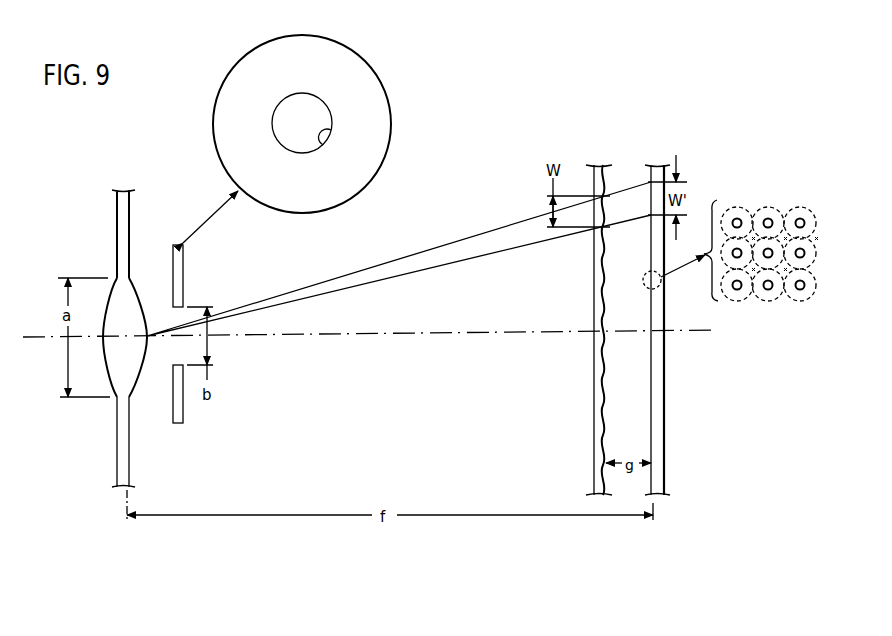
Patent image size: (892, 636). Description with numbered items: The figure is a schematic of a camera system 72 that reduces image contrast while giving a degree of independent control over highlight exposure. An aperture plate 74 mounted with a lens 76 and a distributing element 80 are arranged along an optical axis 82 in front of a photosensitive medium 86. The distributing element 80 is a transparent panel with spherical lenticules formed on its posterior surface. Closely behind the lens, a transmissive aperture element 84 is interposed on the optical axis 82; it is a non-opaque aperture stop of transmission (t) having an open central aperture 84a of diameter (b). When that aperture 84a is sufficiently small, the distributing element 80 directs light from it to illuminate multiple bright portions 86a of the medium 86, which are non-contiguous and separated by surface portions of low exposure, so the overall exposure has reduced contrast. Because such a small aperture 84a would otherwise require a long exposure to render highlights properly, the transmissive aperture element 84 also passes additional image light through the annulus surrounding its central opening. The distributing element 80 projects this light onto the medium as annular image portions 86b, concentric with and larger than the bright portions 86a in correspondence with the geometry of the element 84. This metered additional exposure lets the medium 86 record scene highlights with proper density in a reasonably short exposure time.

The camera system 72 is at (112, 447).
The aperture plate 74 is at (131, 200).
The lens 76 is at (112, 352).
The distributing element 80 is at (594, 398).
The optical axis 82 is at (708, 331).
The transmissive aperture element 84 is at (292, 200).
The aperture 84a is at (323, 145).
The photosensitive medium 86 is at (666, 418).
The bright portions 86a is at (769, 218).
The annular image portions 86b is at (740, 300).